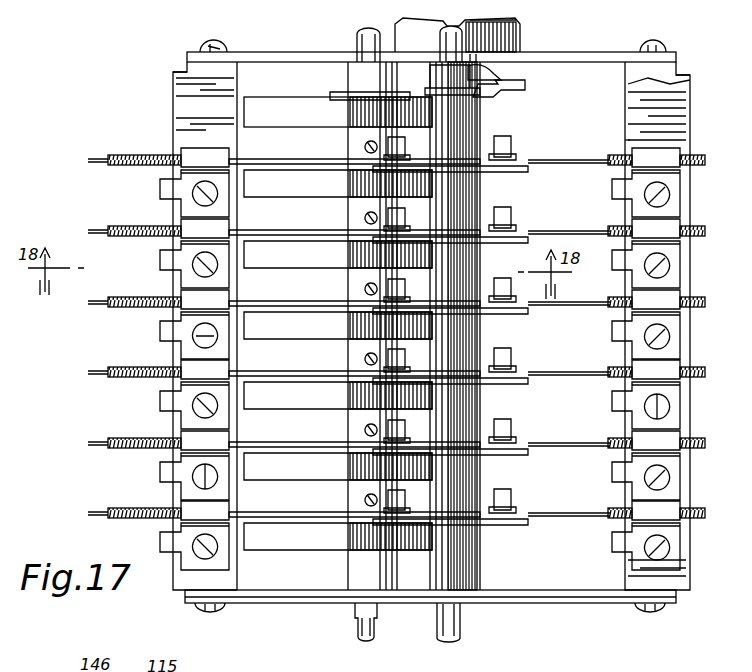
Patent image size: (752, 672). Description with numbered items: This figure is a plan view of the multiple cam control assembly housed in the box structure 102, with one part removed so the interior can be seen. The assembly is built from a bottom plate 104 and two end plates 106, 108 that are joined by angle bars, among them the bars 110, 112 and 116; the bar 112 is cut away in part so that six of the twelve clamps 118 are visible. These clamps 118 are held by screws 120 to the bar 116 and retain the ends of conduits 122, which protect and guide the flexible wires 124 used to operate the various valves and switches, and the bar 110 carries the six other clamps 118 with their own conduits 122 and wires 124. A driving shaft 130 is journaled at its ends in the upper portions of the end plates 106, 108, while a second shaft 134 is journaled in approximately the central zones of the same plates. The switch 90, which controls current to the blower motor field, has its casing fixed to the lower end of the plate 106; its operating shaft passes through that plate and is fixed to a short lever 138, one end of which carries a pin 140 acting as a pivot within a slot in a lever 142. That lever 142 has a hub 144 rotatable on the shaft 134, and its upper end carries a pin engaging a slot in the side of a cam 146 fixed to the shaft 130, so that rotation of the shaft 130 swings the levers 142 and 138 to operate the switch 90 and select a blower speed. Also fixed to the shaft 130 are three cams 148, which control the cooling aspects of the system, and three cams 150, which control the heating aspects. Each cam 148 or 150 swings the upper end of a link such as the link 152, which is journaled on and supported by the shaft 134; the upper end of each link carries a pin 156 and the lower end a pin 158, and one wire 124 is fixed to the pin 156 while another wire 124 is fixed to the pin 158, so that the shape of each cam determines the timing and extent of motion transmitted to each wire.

The switch 90 is at (517, 33).
The box structure 102 is at (480, 604).
The bottom plate 104 is at (590, 72).
The end plate 106 is at (295, 62).
The end plate 108 is at (268, 598).
The angle bar 110 is at (186, 88).
The angle bar 112 is at (658, 78).
The angle bar 116 is at (627, 145).
The clamp 118 is at (190, 203).
The screw 120 is at (195, 190).
The conduit 122 is at (188, 370).
The flexible wire 124 is at (306, 160).
The driving shaft 130 is at (360, 46).
The second shaft 134 is at (440, 45).
The short lever 138 is at (478, 74).
The pin 140 is at (493, 76).
The lever 142 is at (528, 92).
The hub 144 is at (458, 96).
The cam 146 is at (300, 118).
The cam 148 is at (314, 536).
The cam 150 is at (335, 466).
The link 152 is at (466, 174).
The pin 156 is at (390, 150).
The pin 158 is at (504, 280).